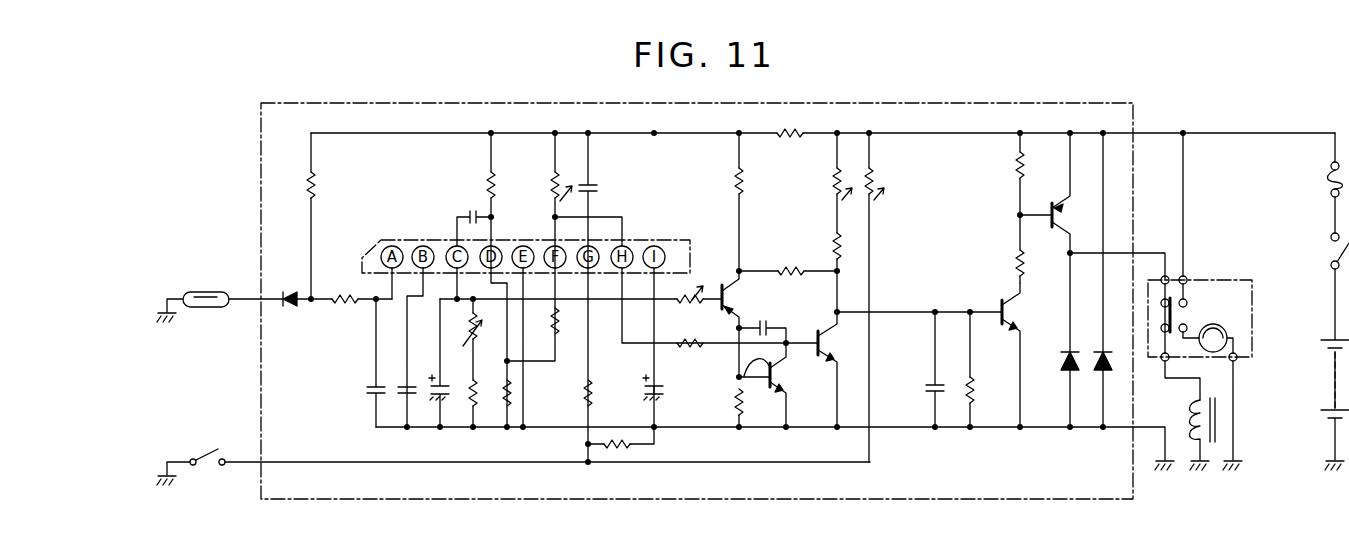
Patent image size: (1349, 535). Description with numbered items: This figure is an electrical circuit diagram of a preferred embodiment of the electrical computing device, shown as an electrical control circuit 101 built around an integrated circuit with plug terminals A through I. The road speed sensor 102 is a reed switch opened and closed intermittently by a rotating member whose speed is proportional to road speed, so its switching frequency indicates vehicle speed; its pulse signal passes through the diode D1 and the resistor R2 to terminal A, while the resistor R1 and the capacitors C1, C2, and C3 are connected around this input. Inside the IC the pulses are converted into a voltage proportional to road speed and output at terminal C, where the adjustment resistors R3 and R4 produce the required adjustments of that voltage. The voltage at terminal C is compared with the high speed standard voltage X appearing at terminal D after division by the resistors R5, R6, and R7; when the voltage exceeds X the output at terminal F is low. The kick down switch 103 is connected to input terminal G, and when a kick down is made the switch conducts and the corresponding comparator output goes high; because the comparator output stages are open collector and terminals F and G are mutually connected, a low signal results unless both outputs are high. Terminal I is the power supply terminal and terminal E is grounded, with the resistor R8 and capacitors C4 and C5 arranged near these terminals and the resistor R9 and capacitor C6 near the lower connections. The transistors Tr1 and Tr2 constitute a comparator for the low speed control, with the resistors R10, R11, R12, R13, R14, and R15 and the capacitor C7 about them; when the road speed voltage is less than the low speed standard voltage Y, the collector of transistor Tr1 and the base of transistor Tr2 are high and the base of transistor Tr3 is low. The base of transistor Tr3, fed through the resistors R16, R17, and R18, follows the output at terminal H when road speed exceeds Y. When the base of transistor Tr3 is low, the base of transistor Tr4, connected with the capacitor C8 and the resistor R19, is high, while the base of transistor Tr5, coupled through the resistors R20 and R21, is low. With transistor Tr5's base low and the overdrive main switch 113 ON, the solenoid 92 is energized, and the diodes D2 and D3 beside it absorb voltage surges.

The control circuit 101 is at (878, 104).
The road speed sensor 102 is at (219, 308).
The kick down switch 103 is at (212, 468).
The overdrive main switch 113 is at (1248, 312).
The solenoid 92 is at (1195, 424).
The resistor R1 is at (325, 216).
The resistor R2 is at (359, 287).
The adjustment resistor R3 is at (460, 396).
The adjustment resistor R4 is at (462, 339).
The resistor R5 is at (504, 200).
The resistor R6 is at (493, 386).
The resistor R7 is at (541, 319).
The variable resistor R8 is at (586, 200).
The resistor R9 is at (570, 392).
The variable resistor R10 is at (704, 282).
The resistor R11 is at (680, 332).
The resistor R12 is at (720, 407).
The resistor R13 is at (758, 202).
The resistor R14 is at (787, 122).
The resistor R15 is at (788, 286).
The resistor R16 is at (819, 272).
The variable resistor R17 is at (825, 183).
The variable resistor R18 is at (887, 297).
The resistor R19 is at (988, 369).
The resistor R20 is at (996, 249).
The resistor R21 is at (1038, 174).
The capacitor C1 is at (368, 363).
The capacitor C2 is at (398, 404).
The electrolytic capacitor C3 is at (429, 363).
The capacitor C4 is at (468, 217).
The capacitor C5 is at (600, 200).
The electrolytic capacitor C6 is at (644, 398).
The capacitor C7 is at (766, 322).
The capacitor C8 is at (922, 369).
The diode D1 is at (304, 316).
The diode D2 is at (1059, 375).
The diode D3 is at (1094, 280).
The transistor Tr1 is at (718, 302).
The transistor Tr2 is at (738, 376).
The transistor Tr3 is at (819, 369).
The transistor Tr4 is at (1000, 355).
The transistor Tr5 is at (1045, 280).